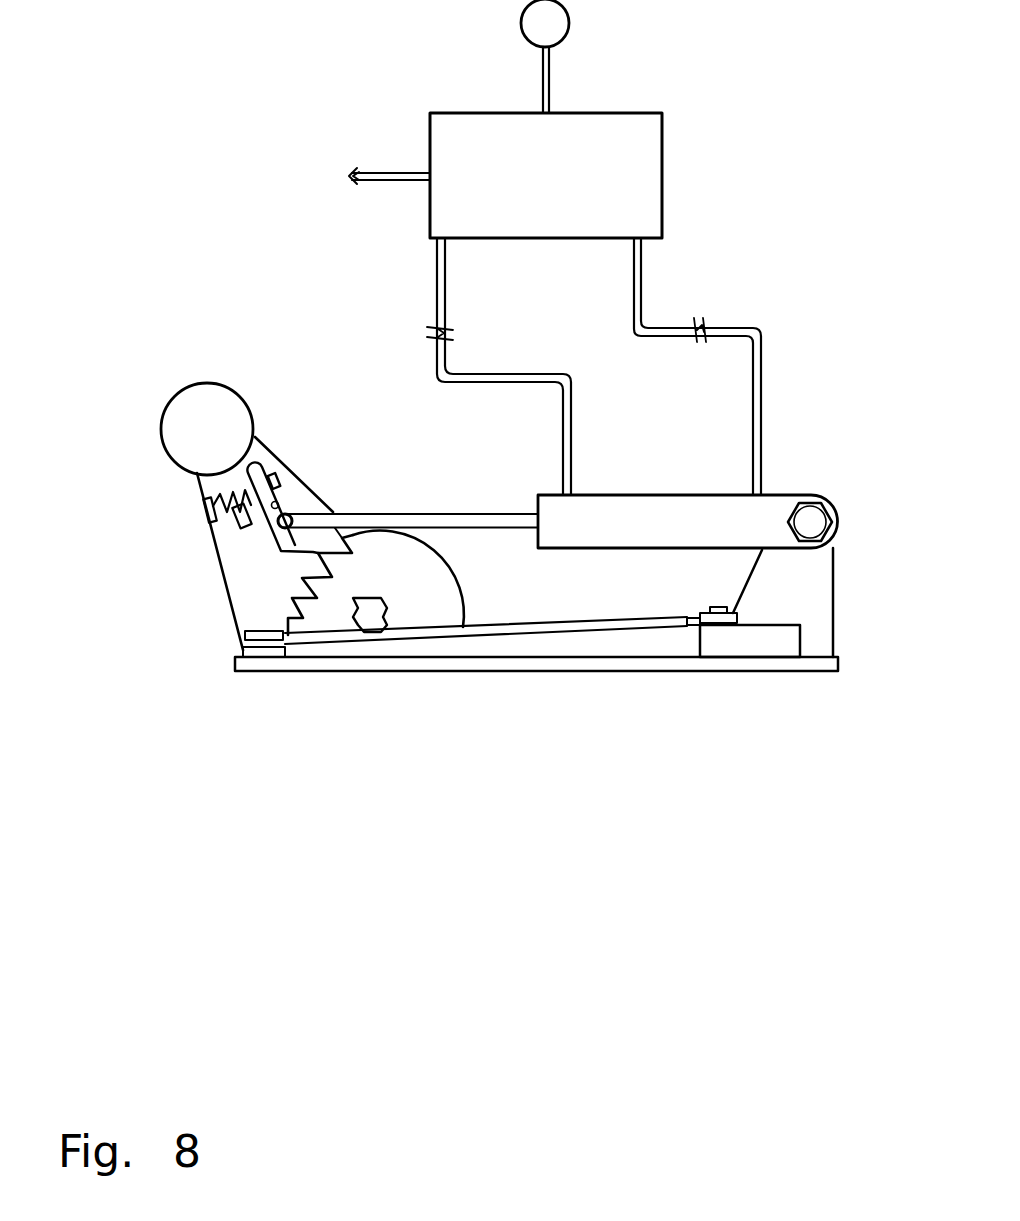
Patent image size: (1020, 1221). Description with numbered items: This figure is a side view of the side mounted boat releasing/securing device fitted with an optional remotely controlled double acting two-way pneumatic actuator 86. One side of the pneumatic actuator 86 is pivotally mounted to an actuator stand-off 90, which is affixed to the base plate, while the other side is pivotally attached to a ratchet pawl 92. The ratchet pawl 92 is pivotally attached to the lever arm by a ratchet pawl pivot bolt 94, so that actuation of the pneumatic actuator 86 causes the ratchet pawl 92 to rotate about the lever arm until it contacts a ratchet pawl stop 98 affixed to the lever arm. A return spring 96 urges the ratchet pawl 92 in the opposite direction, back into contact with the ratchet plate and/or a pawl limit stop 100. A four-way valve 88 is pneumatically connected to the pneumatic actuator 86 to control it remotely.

The two-way pneumatic actuator 86 is at (665, 507).
The four-way valve 88 is at (543, 238).
The actuator stand-off 90 is at (818, 593).
The ratchet pawl 92 is at (297, 547).
The ratchet pawl pivot bolt 94 is at (287, 500).
The return spring 96 is at (213, 518).
The ratchet pawl stop 98 is at (238, 526).
The pawl limit stop 100 is at (273, 470).